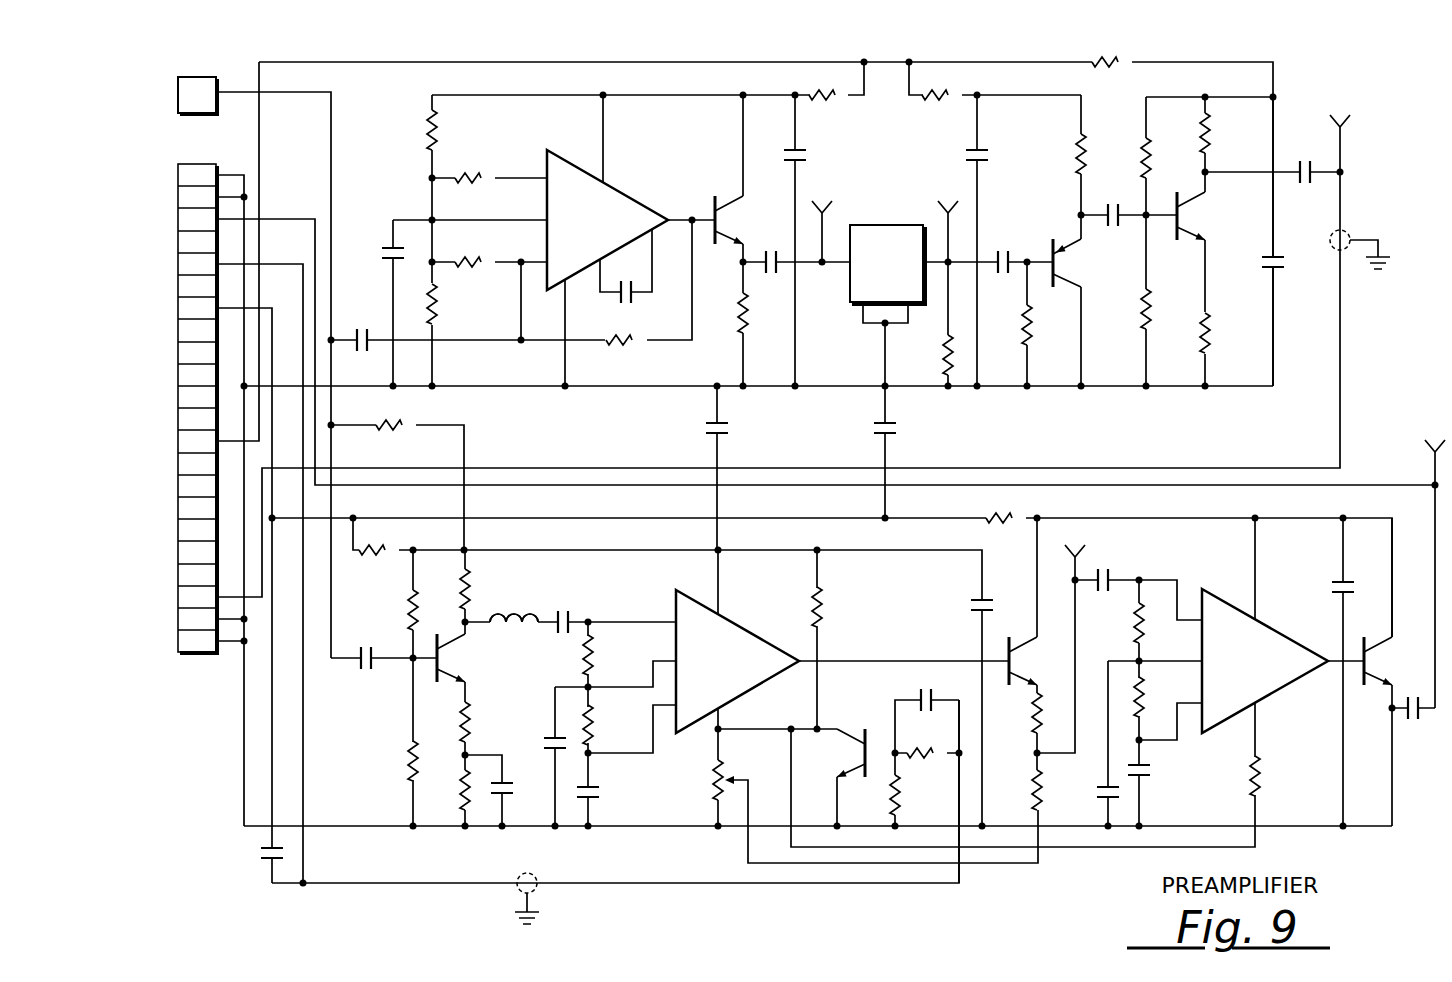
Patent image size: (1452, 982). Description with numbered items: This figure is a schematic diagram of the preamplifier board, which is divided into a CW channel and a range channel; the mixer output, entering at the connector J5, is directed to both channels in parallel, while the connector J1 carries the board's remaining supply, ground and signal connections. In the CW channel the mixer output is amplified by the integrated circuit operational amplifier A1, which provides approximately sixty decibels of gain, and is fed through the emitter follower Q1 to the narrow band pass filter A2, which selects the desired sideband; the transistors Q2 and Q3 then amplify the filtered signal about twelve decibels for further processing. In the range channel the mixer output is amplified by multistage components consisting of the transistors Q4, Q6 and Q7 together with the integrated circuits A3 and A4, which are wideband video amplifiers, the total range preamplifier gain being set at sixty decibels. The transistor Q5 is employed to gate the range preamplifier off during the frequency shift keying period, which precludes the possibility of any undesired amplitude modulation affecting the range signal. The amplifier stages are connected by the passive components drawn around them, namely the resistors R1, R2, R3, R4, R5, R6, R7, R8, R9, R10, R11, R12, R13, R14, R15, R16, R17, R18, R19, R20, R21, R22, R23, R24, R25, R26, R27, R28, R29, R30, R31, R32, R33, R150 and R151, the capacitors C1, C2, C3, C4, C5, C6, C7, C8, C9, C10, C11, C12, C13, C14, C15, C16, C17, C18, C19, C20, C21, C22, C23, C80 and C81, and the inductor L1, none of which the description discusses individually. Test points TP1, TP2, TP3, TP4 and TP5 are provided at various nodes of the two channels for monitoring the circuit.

The mixer output connector J5 is at (152, 83).
The 22-pin connector J1 is at (140, 396).
The resistor 100K R1 is at (399, 426).
The resistor 10K R2 is at (404, 129).
The resistor 10K R3 is at (452, 305).
The resistor 2K R4 is at (471, 160).
The resistor 2K R5 is at (471, 244).
The resistor 5.6M R6 is at (625, 359).
The resistor 4.7K R7 is at (764, 320).
The resistor 470 R8 is at (826, 95).
The resistor 470 R9 is at (940, 95).
The resistor 3.3K R10 is at (927, 355).
The resistor 470K R11 is at (1050, 335).
The resistor 10K R12 is at (1060, 155).
The resistor 9.1K R13 is at (1169, 158).
The resistor 1.5K R14 is at (1169, 308).
The resistor 270 R15 is at (1226, 336).
The resistor 1K R16 is at (1225, 134).
The resistor 470 R17 is at (1110, 58).
The resistor 22K R18 is at (393, 610).
The resistor 5.6K R19 is at (391, 759).
The resistor 2K R20 is at (447, 585).
The resistor 50 R21 is at (446, 721).
The resistor 470 R22 is at (446, 794).
The resistor 1K R23 is at (609, 655).
The resistor 1K R24 is at (609, 723).
The resistor 100 R25 is at (378, 549).
The potentiometer 2K R26 is at (698, 780).
The resistor 3K R27 is at (839, 608).
The resistor 2.4K R28 is at (928, 751).
The resistor 1K R29 is at (1016, 718).
The resistor 1K R30 is at (1018, 790).
The resistor 1K R31 is at (1160, 631).
The resistor 1K R32 is at (1160, 691).
The resistor 100 R33 is at (1004, 518).
The resistor 200 R150 is at (1283, 776).
The resistor 2K R151 is at (921, 799).
The capacitor .01 C1 is at (360, 321).
The capacitor 10 C2 is at (377, 249).
The capacitor 15pf C3 is at (644, 289).
The capacitor 6.8 C4 is at (813, 154).
The capacitor 1.0 C5 is at (770, 260).
The capacitor 1.0 C6 is at (1002, 262).
The capacitor 6.8 C7 is at (958, 154).
The capacitor 1.0 C8 is at (1109, 197).
The capacitor .01 C9 is at (904, 430).
The capacitor 6.8 C10 is at (1294, 271).
The capacitor 1.0 C11 is at (1307, 191).
The capacitor 100pf C12 is at (362, 677).
The capacitor .01 C13 is at (521, 796).
The capacitor .1 C14 is at (536, 741).
The capacitor .1 C15 is at (610, 797).
The capacitor 27pf C16 is at (579, 602).
The capacitor 10 C17 is at (966, 605).
The capacitor 100pf C18 is at (930, 691).
The capacitor .1 C19 is at (1088, 797).
The capacitor 100pf C20 is at (1105, 581).
The capacitor .1 C21 is at (1162, 775).
The capacitor 10 C22 is at (1324, 578).
The capacitor 100pf C23 is at (1418, 732).
The capacitor .01 C80 is at (251, 857).
The capacitor .01 C81 is at (740, 430).
The inductor 15 microhenry L1 is at (514, 599).
The emitter follower Q1 is at (736, 220).
The transistor Q2 is at (1072, 263).
The transistor Q3 is at (1200, 216).
The transistor Q4 is at (459, 658).
The transistor Q5 is at (846, 753).
The transistor Q6 is at (1030, 661).
The transistor Q7 is at (1385, 661).
The integrated circuit operational amplifier A1 is at (612, 223).
The narrow band pass filter A2 is at (887, 264).
The wideband video amplifier integrated circuit A3 is at (745, 661).
The wideband video amplifier integrated circuit A4 is at (1269, 661).
The test point TP1 is at (821, 197).
The test point TP2 is at (947, 197).
The test point TP3 is at (1336, 109).
The test point TP4 is at (1433, 434).
The test point TP5 is at (1074, 541).